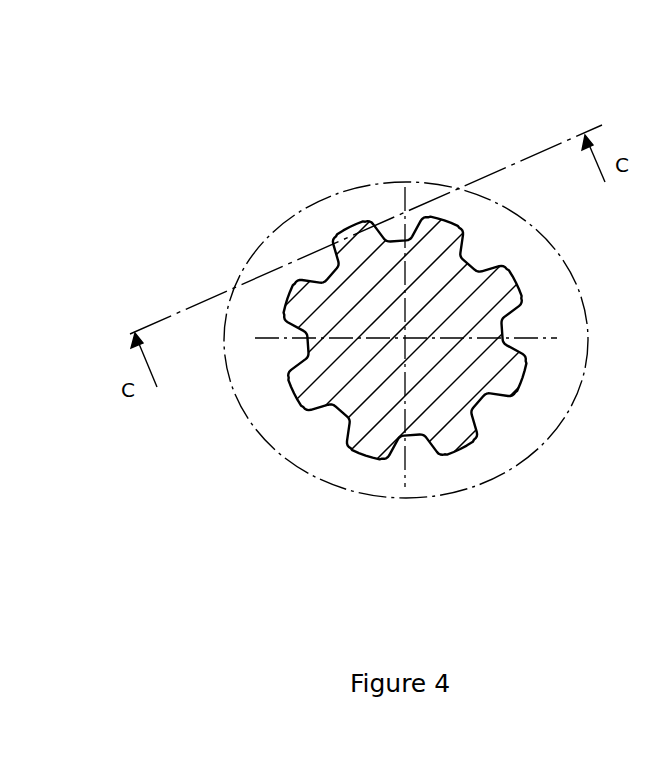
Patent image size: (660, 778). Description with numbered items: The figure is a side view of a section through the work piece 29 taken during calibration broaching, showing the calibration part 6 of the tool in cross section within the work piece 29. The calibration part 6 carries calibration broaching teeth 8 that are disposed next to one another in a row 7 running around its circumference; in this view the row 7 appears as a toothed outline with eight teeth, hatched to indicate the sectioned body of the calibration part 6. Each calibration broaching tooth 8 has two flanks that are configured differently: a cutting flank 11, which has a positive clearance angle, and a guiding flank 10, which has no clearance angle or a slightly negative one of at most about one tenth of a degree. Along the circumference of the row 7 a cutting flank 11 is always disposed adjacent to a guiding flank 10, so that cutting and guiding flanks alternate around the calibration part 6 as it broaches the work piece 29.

The calibration part 6 is at (378, 287).
The row of calibration teeth 7 is at (448, 237).
The calibration broaching tooth 8 is at (358, 220).
The guiding flank 10 is at (307, 277).
The cutting flank 11 is at (343, 242).
The work piece 29 is at (263, 385).